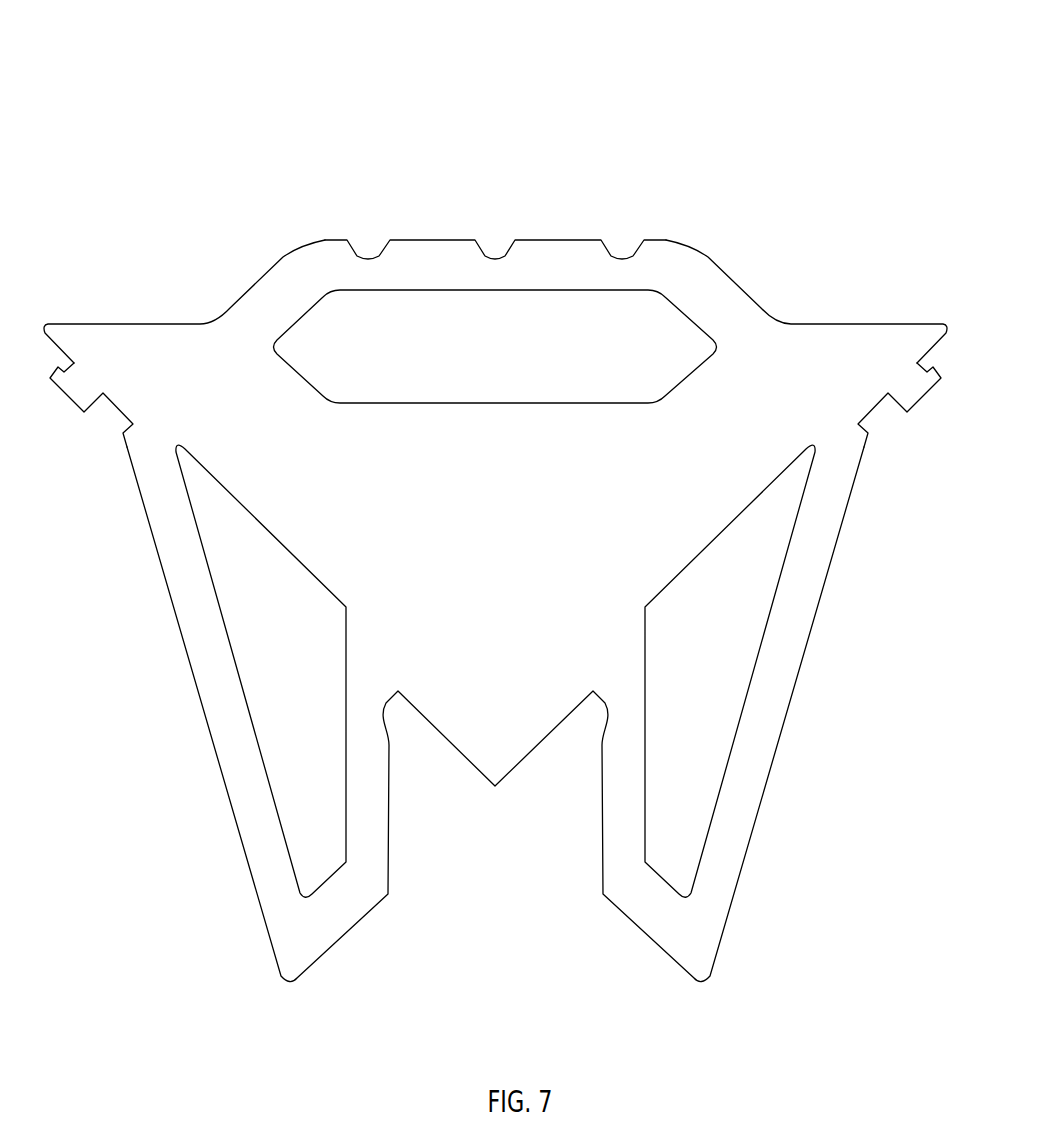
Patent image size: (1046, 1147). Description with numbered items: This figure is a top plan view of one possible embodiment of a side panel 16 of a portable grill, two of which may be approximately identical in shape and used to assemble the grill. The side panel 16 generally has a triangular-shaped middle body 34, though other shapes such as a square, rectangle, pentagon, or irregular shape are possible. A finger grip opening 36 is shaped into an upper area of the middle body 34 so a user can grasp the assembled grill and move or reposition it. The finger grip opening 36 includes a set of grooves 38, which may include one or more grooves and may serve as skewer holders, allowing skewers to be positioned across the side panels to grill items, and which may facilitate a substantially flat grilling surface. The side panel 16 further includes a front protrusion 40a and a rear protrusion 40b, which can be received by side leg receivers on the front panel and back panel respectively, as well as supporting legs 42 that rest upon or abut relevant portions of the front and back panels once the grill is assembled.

The side panel 16 is at (641, 86).
The middle body 34 is at (507, 573).
The finger grip opening 36 is at (603, 335).
The set of grooves 38 is at (369, 237).
The front protrusion 40a is at (82, 382).
The rear protrusion 40b is at (909, 382).
The supporting legs 42 is at (651, 892).